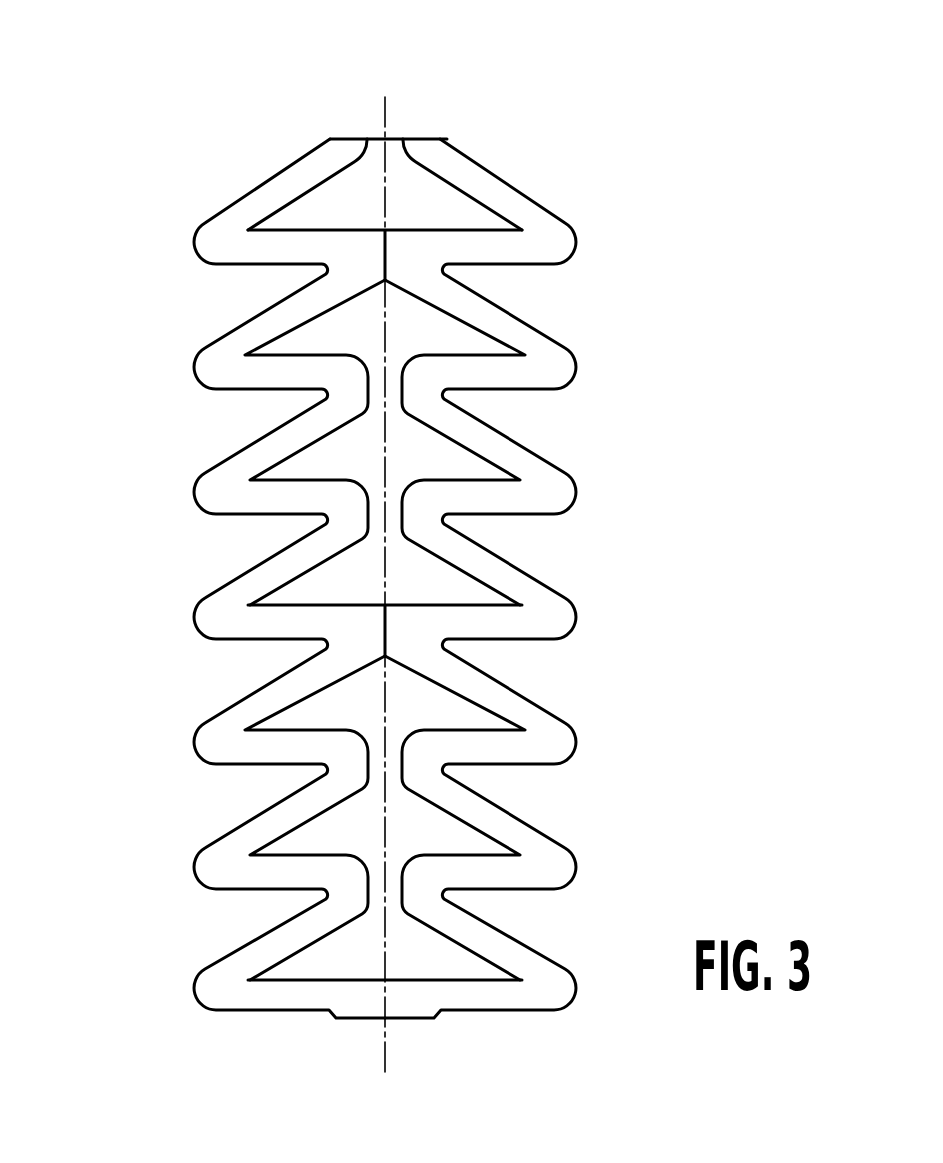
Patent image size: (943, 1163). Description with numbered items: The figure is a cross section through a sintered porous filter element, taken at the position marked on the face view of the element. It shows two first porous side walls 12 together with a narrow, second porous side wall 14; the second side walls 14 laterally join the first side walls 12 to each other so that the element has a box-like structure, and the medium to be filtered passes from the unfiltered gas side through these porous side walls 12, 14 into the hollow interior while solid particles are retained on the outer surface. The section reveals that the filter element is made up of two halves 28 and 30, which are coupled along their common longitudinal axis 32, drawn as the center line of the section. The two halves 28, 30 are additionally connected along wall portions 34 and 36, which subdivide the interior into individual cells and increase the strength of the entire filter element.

The first porous side wall 12 is at (228, 190).
The second porous side wall 14 is at (358, 1045).
The first half 28 is at (327, 150).
The second half 30 is at (453, 138).
The longitudinal axis 32 is at (390, 107).
The wall portion 34 is at (405, 257).
The wall portion 36 is at (385, 605).